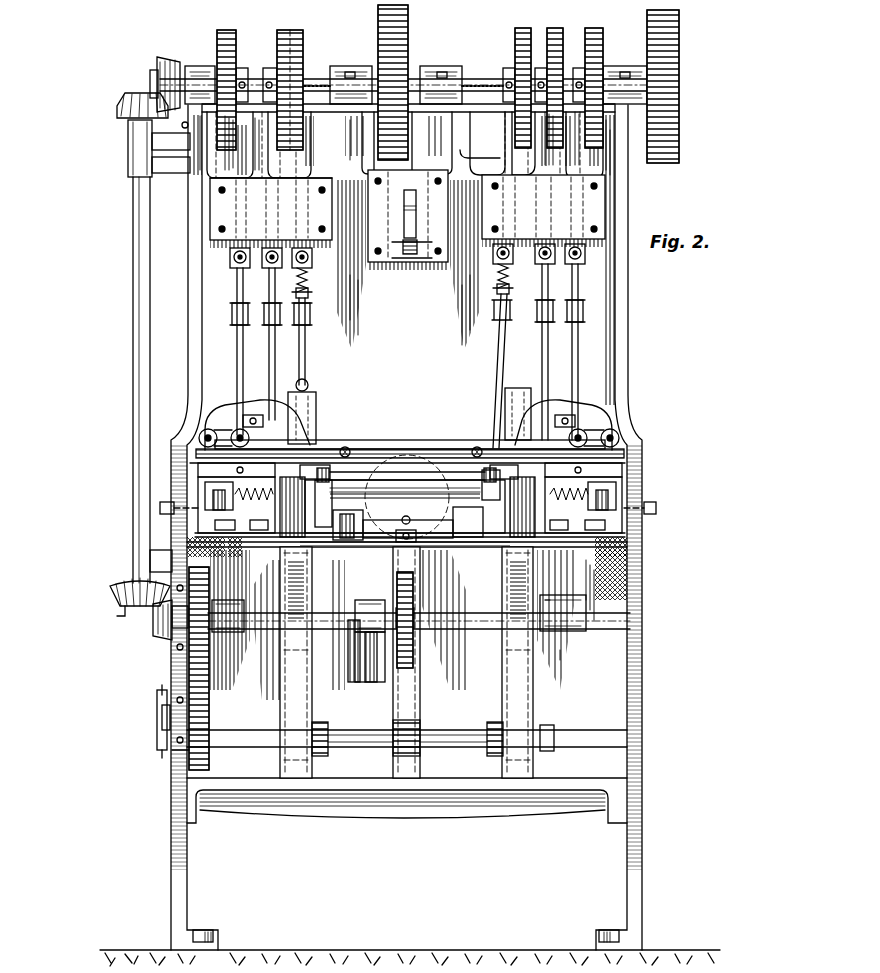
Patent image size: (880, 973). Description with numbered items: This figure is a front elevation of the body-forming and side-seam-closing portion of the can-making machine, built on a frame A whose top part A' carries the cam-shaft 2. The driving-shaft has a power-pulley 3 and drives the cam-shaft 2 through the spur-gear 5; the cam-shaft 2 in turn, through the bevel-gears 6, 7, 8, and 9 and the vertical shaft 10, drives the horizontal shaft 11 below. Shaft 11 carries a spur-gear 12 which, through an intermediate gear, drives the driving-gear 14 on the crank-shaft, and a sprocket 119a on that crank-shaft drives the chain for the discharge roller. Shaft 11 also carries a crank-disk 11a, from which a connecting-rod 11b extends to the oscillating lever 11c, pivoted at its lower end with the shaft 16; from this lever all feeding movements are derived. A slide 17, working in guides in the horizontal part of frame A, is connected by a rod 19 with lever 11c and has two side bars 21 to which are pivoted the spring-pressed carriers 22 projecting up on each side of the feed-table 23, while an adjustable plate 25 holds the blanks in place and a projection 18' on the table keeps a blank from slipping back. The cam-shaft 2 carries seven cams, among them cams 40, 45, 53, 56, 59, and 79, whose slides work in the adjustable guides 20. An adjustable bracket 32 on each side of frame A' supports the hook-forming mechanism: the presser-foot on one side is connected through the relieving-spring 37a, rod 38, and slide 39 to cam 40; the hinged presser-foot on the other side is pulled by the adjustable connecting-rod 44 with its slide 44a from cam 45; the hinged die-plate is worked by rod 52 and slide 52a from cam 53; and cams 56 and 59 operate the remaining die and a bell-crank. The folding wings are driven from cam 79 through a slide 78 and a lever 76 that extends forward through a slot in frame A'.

The cam-shaft 2 is at (314, 78).
The power-pulley 3 is at (680, 48).
The spur-gear 5 is at (603, 40).
The bevel-gear 6 is at (160, 68).
The bevel-gear 7 is at (120, 100).
The bevel-gear 8 is at (114, 592).
The bevel-gear 9 is at (165, 637).
The vertical shaft 10 is at (131, 352).
The horizontal shaft 11 is at (325, 625).
The crank-disk 11a is at (412, 662).
The connecting-rod 11b is at (412, 620).
The oscillating lever 11c is at (420, 580).
The spur-gear 12 is at (190, 657).
The driving-gear 14 is at (172, 750).
The shaft 16 is at (440, 735).
The slide 17 is at (445, 514).
The guide 18' is at (409, 448).
The rod 19 is at (410, 538).
The guides 20 is at (218, 209).
The side bars 21 is at (440, 487).
The spring-pressed carriers 22 is at (326, 468).
The feed-table 23 is at (392, 455).
The adjustable plate 25 is at (425, 458).
The adjustable bracket 32 is at (212, 425).
The relieving-spring 37a is at (310, 282).
The rod 38 is at (298, 371).
The slide 39 is at (308, 172).
The cam 40 is at (298, 40).
The adjustable connecting-rod 44 is at (500, 362).
The slide 44a is at (508, 143).
The cam 45 is at (515, 42).
The adjustable rod 52 is at (270, 362).
The slide 52a is at (256, 268).
The cam 53 is at (280, 42).
The cam 56 is at (556, 38).
The cam 59 is at (220, 40).
The lever 76 is at (410, 232).
The slide 78 is at (406, 268).
The cam 79 is at (405, 50).
The sprocket 119a is at (158, 720).
The frame A is at (419, 527).
The top part of frame A' is at (408, 267).